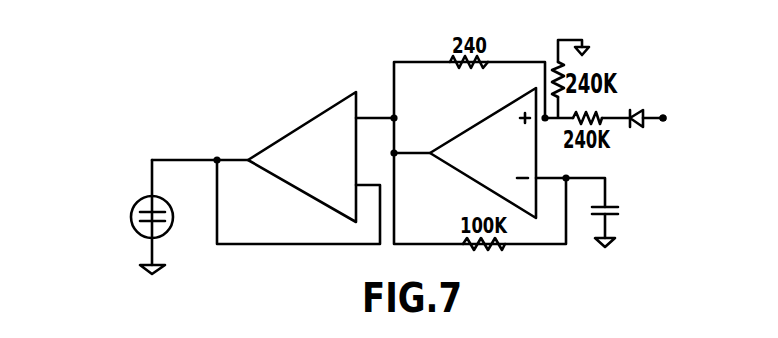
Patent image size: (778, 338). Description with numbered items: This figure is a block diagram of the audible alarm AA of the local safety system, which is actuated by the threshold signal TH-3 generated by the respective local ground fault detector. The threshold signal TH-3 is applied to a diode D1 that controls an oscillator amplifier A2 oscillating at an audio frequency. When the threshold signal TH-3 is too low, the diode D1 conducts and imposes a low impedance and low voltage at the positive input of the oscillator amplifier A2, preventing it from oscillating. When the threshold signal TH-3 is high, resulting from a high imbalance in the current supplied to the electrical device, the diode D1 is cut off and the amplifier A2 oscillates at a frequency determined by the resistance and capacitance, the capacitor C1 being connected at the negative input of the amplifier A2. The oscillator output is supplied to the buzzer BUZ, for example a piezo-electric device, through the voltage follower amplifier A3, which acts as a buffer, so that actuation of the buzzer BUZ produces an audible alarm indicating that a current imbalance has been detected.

The buzzer BUZ is at (173, 215).
The voltage follower amplifier A3 is at (297, 128).
The oscillator amplifier A2 is at (470, 128).
The audible alarm AA is at (316, 250).
The threshold signal TH-3 is at (663, 116).
The diode D1 is at (641, 132).
The capacitor C1 is at (619, 206).